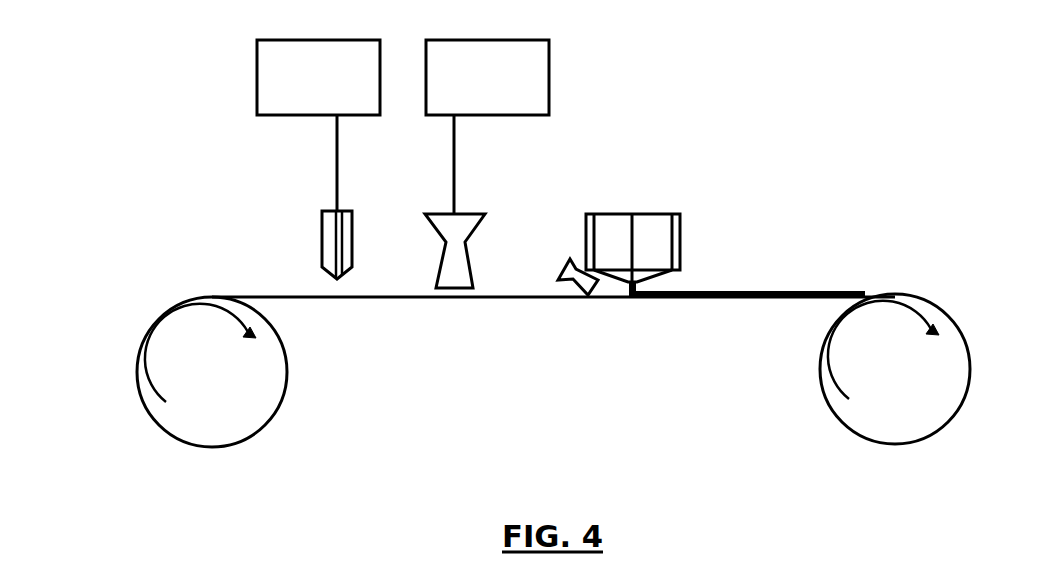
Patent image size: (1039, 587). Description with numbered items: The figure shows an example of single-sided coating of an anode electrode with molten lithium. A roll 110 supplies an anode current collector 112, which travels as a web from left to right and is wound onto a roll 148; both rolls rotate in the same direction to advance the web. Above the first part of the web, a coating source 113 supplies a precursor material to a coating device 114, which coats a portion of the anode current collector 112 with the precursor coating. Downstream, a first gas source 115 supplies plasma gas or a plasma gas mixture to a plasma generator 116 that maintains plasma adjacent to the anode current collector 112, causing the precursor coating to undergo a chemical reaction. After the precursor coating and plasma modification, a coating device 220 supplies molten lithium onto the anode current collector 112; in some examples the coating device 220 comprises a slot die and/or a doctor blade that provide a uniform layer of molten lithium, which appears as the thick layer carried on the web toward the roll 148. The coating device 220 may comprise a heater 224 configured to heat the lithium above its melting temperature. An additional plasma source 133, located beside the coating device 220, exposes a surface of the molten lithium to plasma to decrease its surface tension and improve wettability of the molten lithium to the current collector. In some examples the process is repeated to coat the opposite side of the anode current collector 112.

The roll 110 is at (172, 437).
The anode current collector 112 is at (301, 297).
The coating source 113 is at (257, 82).
The coating device 114 is at (322, 232).
The first gas source 115 is at (549, 78).
The plasma generator 116 is at (436, 213).
The additional plasma source 133 is at (558, 279).
The roll 148 is at (857, 434).
The coating device 220 is at (586, 233).
The heater 224 is at (680, 241).